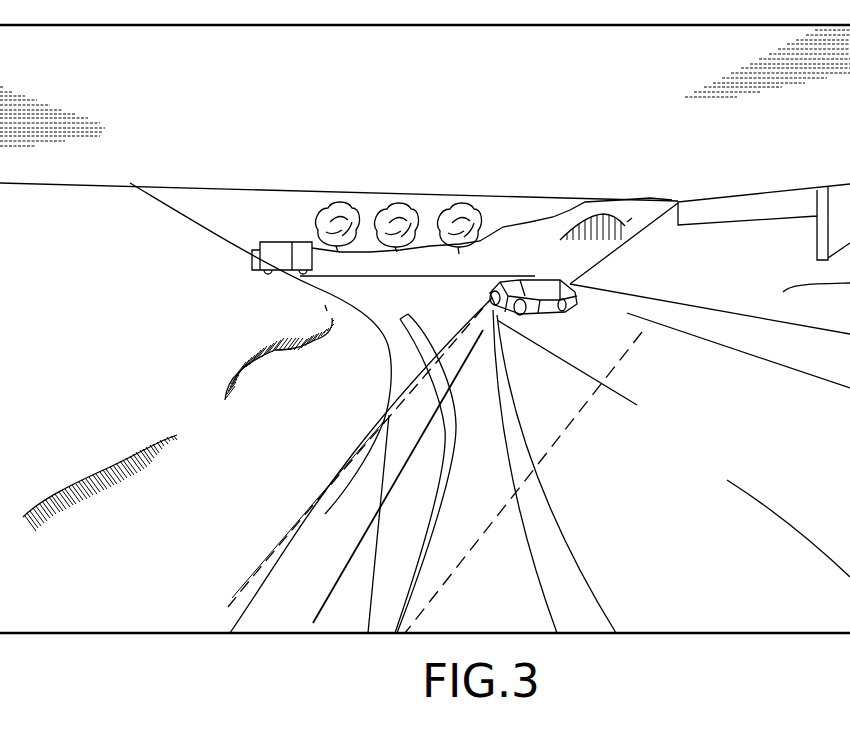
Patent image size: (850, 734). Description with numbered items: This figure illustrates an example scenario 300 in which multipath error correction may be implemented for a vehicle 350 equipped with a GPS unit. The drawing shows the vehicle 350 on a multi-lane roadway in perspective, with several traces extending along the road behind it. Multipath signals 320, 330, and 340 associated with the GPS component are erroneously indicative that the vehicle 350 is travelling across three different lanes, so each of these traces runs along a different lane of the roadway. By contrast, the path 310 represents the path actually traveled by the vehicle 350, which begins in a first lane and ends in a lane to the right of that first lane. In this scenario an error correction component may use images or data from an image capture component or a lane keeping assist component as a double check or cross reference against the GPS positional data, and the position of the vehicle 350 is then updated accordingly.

The example scenario 300 is at (153, 163).
The path 310 is at (590, 604).
The multipath signal 320 is at (618, 363).
The multipath signal 330 is at (262, 560).
The multipath signal 340 is at (355, 552).
The vehicle 350 is at (530, 280).